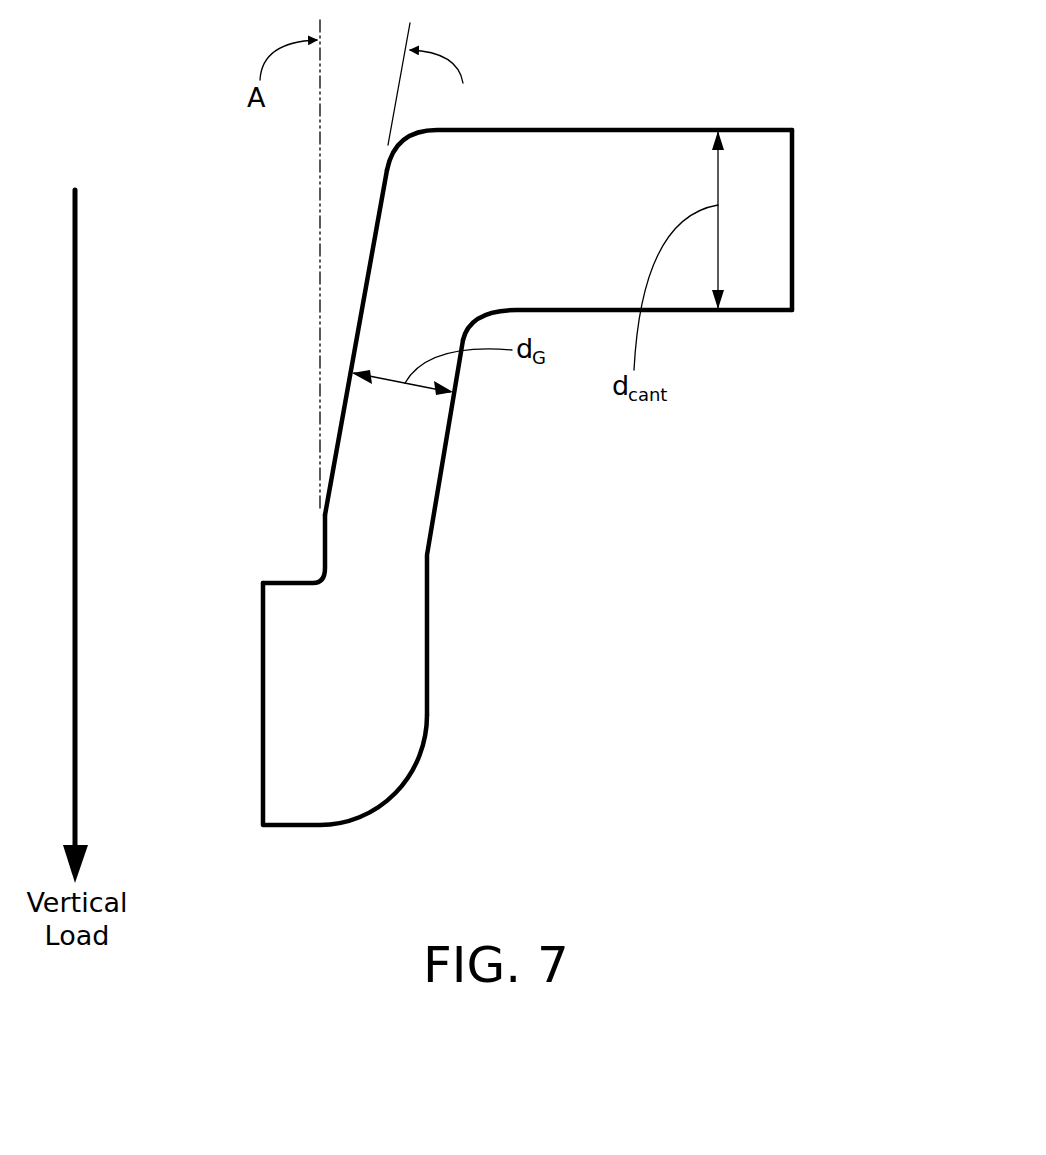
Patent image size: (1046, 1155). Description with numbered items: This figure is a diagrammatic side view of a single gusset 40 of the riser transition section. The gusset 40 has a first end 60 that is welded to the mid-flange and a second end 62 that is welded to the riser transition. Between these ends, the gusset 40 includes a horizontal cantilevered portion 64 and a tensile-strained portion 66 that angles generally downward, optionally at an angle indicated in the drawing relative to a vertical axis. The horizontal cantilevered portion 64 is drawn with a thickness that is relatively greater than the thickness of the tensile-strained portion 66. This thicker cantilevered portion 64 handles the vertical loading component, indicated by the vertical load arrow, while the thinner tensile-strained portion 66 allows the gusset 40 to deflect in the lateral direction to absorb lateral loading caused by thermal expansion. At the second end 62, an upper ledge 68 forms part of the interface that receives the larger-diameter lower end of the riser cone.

The gusset 40 is at (273, 373).
The first end 60 is at (792, 212).
The second end 62 is at (260, 690).
The horizontal cantilevered portion 64 is at (560, 190).
The tensile-strained portion 66 is at (407, 440).
The upper ledge 68 is at (290, 582).